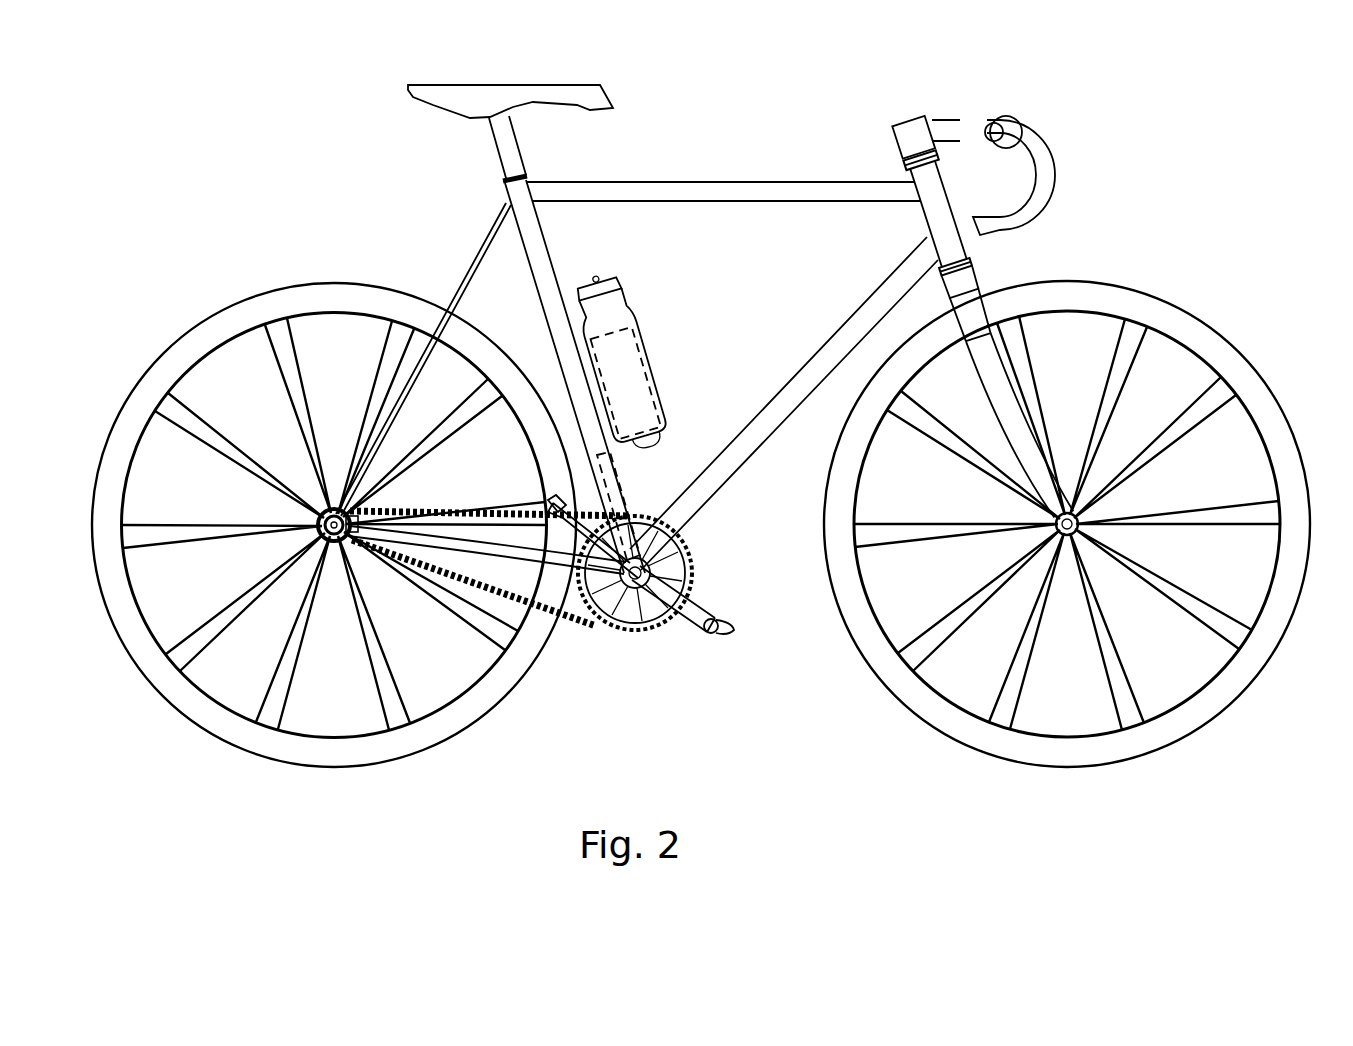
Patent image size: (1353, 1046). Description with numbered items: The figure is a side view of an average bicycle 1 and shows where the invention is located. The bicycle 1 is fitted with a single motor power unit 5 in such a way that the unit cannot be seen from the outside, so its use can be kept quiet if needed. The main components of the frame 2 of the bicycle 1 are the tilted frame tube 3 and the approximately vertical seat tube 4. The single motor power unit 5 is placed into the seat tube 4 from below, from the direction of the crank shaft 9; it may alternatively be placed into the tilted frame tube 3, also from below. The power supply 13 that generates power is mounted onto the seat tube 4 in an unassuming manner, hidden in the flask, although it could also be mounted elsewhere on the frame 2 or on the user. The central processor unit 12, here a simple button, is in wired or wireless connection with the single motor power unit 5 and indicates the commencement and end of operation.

The bicycle 1 is at (1172, 300).
The frame 2 is at (796, 188).
The tilted frame tube 3 is at (822, 373).
The seat tube 4 is at (558, 318).
The single motor power unit 5 is at (672, 580).
The crank shaft 9 is at (683, 620).
The central processor unit 12 is at (890, 172).
The power supply 13 is at (623, 367).